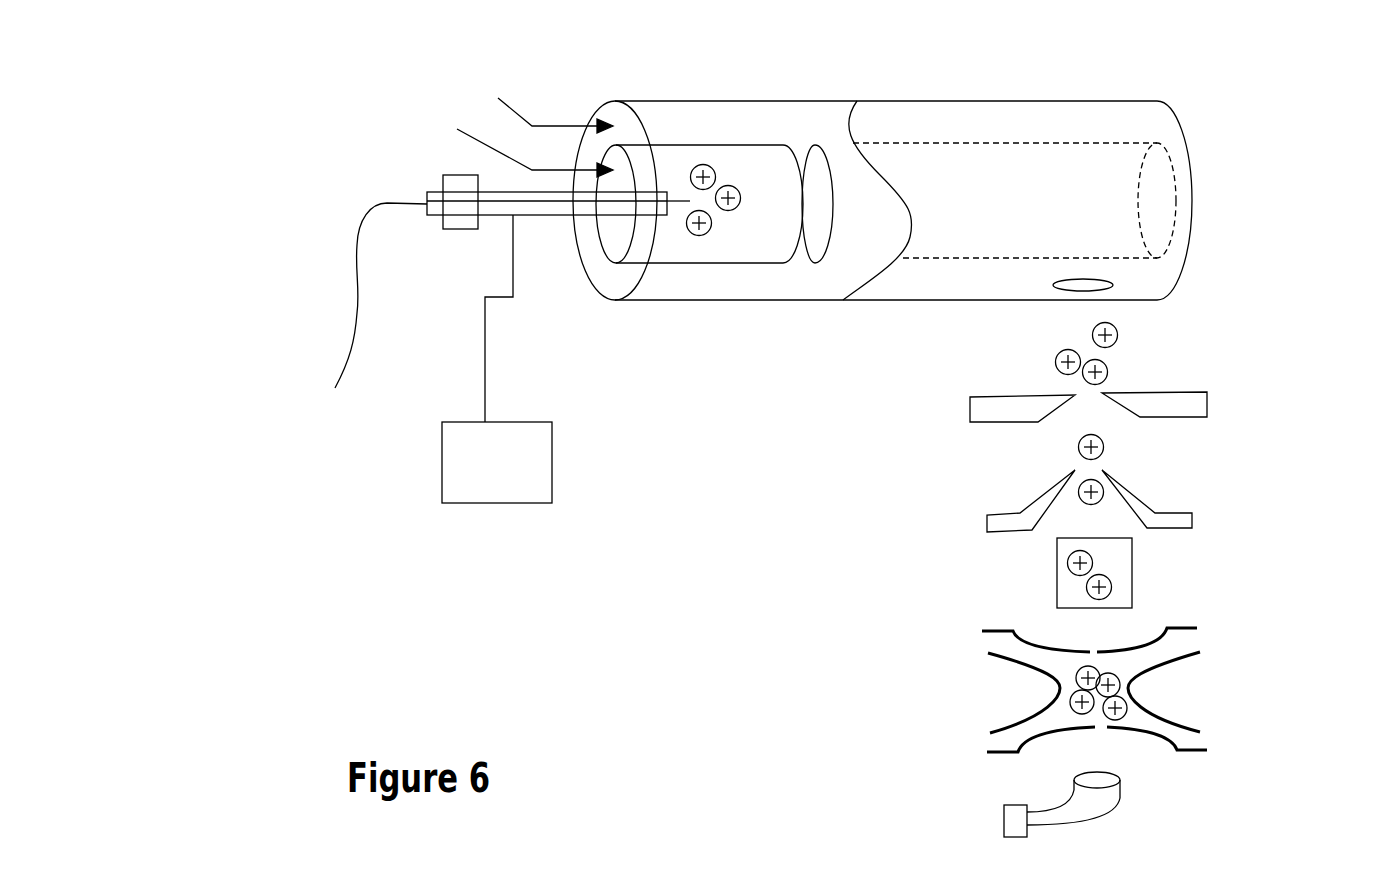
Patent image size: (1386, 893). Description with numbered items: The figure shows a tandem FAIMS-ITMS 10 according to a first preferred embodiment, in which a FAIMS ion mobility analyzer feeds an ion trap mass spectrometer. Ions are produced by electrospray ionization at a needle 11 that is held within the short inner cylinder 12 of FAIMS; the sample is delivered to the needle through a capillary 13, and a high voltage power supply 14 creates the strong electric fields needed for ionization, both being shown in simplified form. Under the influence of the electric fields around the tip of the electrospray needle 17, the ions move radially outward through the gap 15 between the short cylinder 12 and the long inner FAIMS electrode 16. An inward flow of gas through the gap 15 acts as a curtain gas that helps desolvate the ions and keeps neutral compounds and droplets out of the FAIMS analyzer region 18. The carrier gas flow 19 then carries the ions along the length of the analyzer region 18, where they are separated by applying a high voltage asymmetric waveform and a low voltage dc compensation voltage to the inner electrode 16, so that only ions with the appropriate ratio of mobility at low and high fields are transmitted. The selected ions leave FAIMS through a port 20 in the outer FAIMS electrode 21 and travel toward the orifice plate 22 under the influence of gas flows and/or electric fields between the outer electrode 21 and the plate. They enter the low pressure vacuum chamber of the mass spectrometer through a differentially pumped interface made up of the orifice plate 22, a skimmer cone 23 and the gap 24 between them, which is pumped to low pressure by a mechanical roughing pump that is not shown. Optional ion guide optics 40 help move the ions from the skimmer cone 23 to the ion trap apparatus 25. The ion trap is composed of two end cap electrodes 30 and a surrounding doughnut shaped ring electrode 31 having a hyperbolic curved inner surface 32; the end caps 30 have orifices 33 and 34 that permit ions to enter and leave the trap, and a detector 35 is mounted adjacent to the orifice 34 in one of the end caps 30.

The tandem FAIMS-ITMS 10 is at (607, 667).
The needle 11 is at (552, 215).
The short inner cylinder 12 is at (688, 143).
The capillary 13 is at (357, 242).
The high voltage power supply 14 is at (442, 480).
The gap 15 is at (803, 145).
The long inner FAIMS electrode 16 is at (1100, 140).
The tip of the electrospray needle 17 is at (683, 201).
The FAIMS analyzer region 18 is at (958, 122).
The carrier gas flow 19 is at (523, 115).
The port 20 is at (1113, 287).
The outer FAIMS electrode 21 is at (923, 300).
The orifice plate 22 is at (1207, 402).
The skimmer cone 23 is at (1192, 520).
The gap 24 is at (1010, 460).
The ion trap apparatus 25 is at (1091, 716).
The end cap electrodes 30 is at (973, 632).
The ring electrode 31 is at (1042, 673).
The hyperbolic curved inner surface 32 is at (1128, 688).
The orifice 33 is at (1087, 650).
The orifice 34 is at (1100, 728).
The detector 35 is at (1004, 825).
The ion guide optics 40 is at (1132, 569).